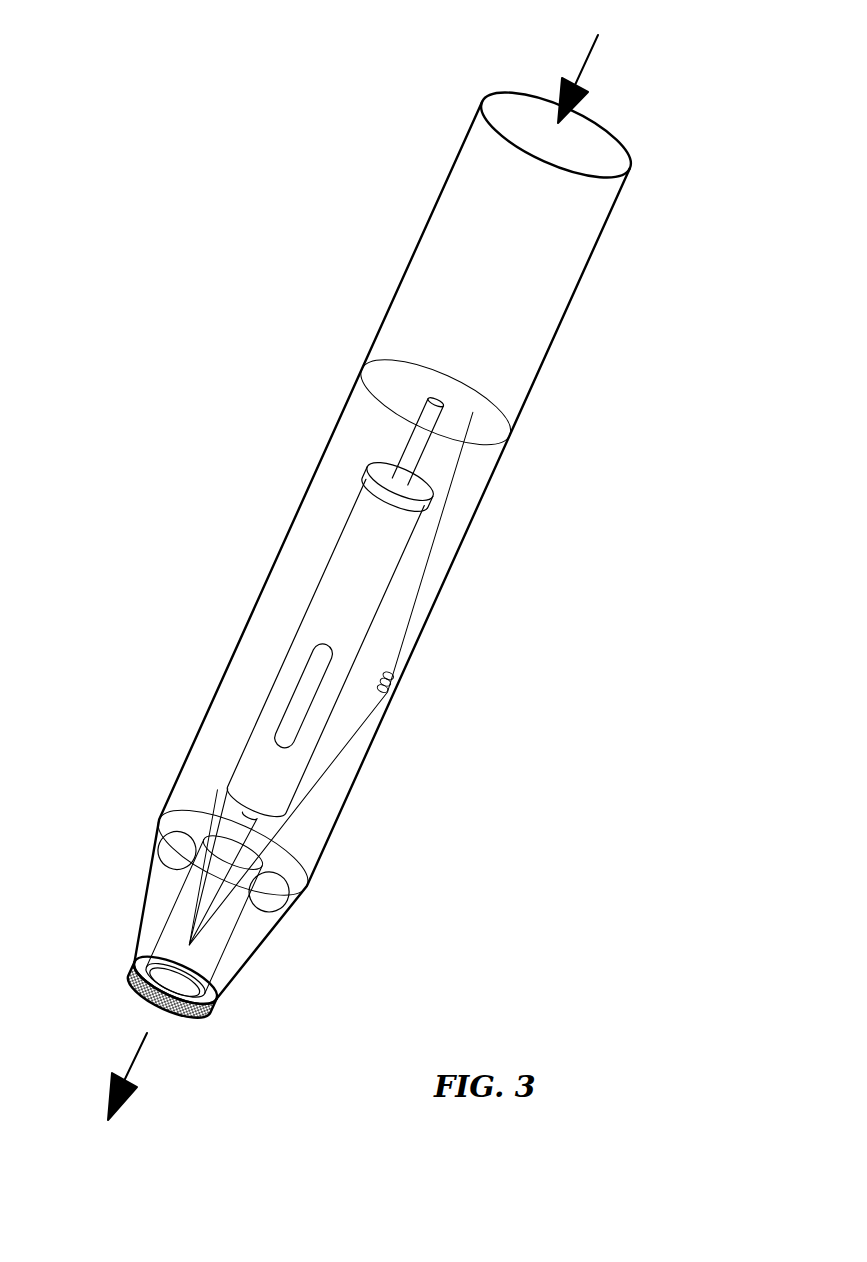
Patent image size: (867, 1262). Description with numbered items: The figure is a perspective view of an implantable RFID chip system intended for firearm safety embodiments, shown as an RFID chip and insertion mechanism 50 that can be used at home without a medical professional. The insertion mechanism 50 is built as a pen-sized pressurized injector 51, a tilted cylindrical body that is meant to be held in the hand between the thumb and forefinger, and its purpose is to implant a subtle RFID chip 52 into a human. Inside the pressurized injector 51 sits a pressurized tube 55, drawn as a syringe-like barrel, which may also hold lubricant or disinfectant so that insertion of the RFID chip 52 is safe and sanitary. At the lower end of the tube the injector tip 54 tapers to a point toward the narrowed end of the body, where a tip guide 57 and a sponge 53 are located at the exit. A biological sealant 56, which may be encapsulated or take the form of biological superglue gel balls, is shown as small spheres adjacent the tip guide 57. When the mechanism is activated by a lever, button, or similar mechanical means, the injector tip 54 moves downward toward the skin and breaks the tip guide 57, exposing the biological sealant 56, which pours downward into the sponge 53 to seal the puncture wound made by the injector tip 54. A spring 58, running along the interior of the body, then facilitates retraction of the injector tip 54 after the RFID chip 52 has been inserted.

The insertion mechanism 50 is at (359, 116).
The pressurized injector 51 is at (598, 240).
The RFID chip 52 is at (307, 688).
The sponge 53 is at (203, 1023).
The injector tip 54 is at (252, 840).
The pressurized tube 55 is at (346, 535).
The biological sealant 56 is at (168, 857).
The tip guide 57 is at (205, 840).
The spring 58 is at (438, 538).